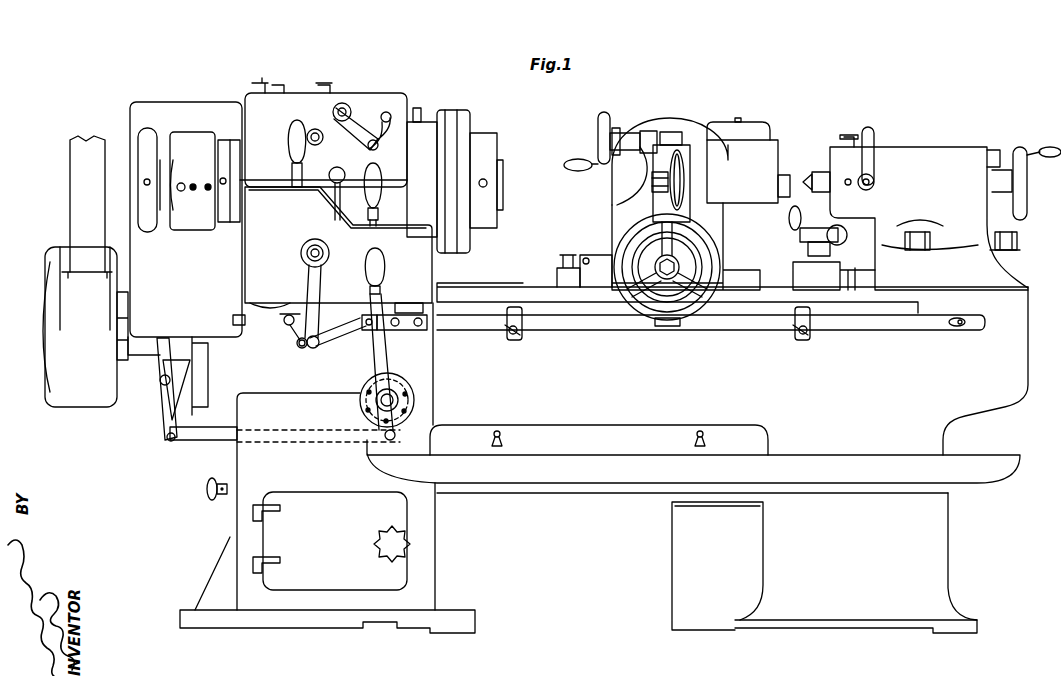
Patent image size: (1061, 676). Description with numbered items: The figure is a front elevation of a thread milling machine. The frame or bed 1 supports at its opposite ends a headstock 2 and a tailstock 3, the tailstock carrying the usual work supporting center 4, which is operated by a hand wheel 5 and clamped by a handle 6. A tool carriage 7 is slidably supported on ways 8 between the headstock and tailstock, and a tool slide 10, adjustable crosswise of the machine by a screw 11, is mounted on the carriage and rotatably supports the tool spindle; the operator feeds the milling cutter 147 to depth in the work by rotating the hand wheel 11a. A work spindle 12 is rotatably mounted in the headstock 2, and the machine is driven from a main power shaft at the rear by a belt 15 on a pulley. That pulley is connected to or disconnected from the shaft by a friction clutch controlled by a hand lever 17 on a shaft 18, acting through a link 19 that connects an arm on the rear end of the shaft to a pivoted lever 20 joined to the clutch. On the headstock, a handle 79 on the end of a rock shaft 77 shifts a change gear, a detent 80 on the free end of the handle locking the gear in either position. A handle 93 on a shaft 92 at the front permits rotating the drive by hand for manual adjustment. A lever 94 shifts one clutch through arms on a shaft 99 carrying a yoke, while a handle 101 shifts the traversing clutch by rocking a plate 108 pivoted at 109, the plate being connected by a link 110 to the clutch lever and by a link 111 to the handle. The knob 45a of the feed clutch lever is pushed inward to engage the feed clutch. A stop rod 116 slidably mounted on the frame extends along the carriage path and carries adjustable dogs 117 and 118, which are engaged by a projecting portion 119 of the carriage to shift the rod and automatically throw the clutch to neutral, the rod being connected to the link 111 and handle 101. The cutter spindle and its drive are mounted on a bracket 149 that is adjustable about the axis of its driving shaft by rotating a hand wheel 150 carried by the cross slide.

The frame or bed 1 is at (555, 420).
The headstock 2 is at (287, 97).
The tailstock 3 is at (1000, 263).
The work supporting center 4 is at (806, 182).
The hand wheel 5 is at (1013, 150).
The handle 6 is at (875, 138).
The tool carriage 7 is at (565, 268).
The ways 8 is at (523, 283).
The tool slide 10 is at (615, 210).
The screw 11 is at (660, 272).
The hand wheel 11a is at (712, 250).
The work spindle 12 is at (498, 175).
The belt 15 is at (72, 194).
The hand lever 17 is at (382, 268).
The shaft 18 is at (396, 394).
The link 19 is at (188, 441).
The lever 20 is at (165, 410).
The knob 45a is at (345, 160).
The rock shaft 77 is at (342, 103).
The handle 79 is at (382, 112).
The detent 80 is at (379, 147).
The shaft 92 is at (303, 248).
The handle 93 is at (306, 280).
The lever 94 is at (288, 140).
The shaft 99 is at (313, 128).
The handle 101 is at (380, 175).
The plate 108 is at (299, 347).
The pivot 109 is at (286, 325).
The link 110 is at (233, 319).
The link 111 is at (348, 330).
The stop rod 116 is at (718, 325).
The dog 117 is at (797, 328).
The dog 118 is at (509, 327).
The projecting portion 119 is at (662, 326).
The milling cutter 147 is at (690, 188).
The bracket 149 is at (757, 125).
The hand wheel 150 is at (598, 120).